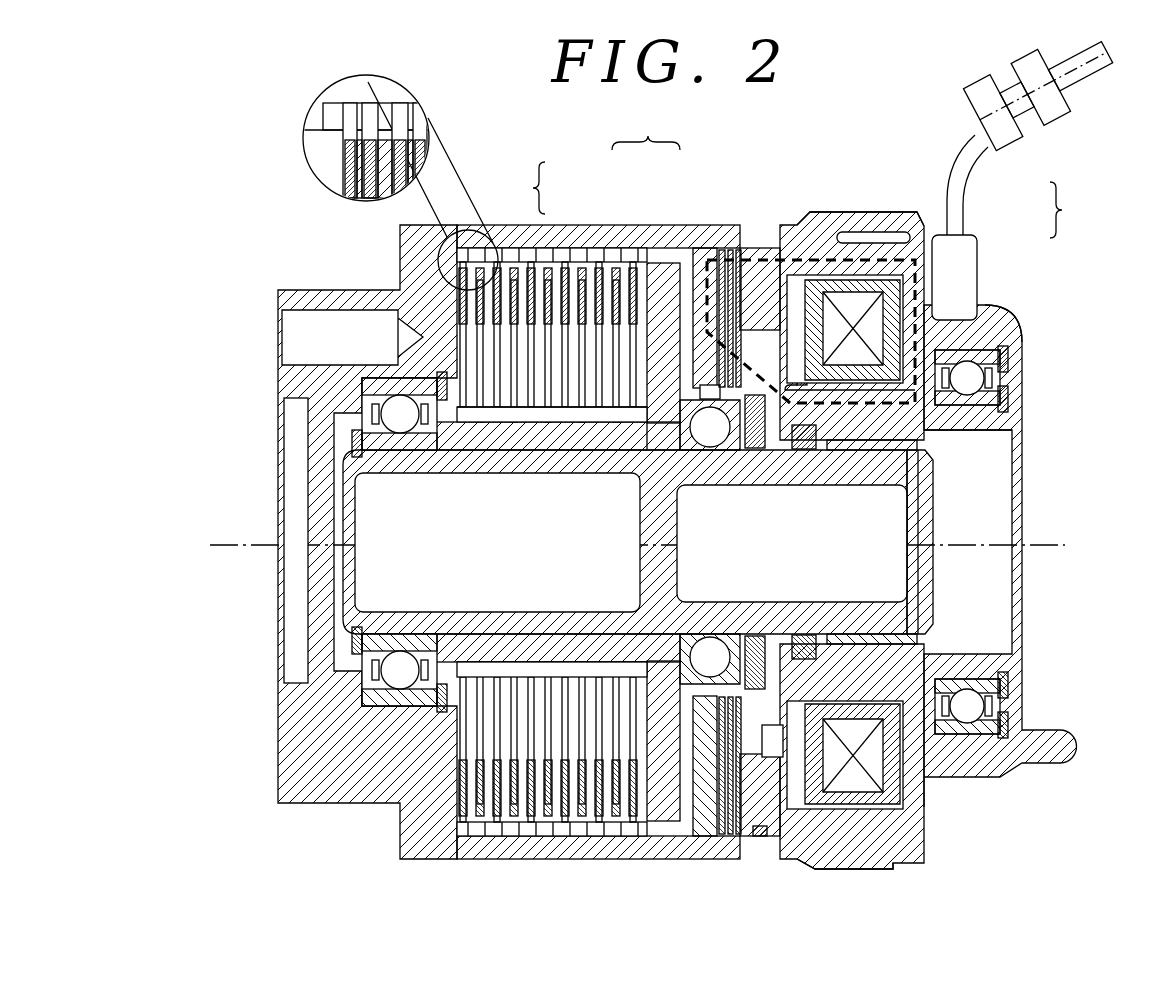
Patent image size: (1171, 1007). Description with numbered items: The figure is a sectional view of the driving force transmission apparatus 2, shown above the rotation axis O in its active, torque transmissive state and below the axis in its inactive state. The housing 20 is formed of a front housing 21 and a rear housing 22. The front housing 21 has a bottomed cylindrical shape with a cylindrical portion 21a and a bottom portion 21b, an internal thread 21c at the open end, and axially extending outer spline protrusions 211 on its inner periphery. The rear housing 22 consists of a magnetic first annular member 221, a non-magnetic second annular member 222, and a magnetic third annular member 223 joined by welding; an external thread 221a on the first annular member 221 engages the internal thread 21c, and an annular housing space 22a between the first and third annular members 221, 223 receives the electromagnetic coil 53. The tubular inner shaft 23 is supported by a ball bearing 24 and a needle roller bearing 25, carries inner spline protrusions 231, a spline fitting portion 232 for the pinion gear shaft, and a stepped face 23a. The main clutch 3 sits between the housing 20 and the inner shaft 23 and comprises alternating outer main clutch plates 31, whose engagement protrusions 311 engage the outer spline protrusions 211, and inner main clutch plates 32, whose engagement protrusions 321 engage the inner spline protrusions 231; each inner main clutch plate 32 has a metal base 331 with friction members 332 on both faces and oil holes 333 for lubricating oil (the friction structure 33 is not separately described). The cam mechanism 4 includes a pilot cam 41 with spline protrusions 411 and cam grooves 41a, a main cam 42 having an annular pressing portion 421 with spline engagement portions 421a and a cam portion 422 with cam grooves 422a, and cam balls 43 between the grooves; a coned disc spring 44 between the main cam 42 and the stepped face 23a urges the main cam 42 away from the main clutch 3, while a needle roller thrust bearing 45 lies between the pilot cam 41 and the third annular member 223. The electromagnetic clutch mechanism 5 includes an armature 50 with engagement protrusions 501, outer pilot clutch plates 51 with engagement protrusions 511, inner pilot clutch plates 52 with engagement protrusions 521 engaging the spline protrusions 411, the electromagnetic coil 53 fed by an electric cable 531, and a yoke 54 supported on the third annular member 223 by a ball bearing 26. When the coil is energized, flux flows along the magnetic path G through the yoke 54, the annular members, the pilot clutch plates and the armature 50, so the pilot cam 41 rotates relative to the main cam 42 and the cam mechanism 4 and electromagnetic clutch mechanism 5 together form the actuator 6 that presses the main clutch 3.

The driving force transmission apparatus 2 is at (669, 480).
The housing 20 is at (659, 477).
The front housing 21 is at (659, 477).
The cylindrical portion 21a is at (532, 232).
The bottom portion 21b is at (331, 542).
The internal thread 21c is at (930, 236).
The outer spline protrusions 211 is at (368, 110).
The first annular member 221 is at (853, 536).
The external thread 221a is at (857, 846).
The second annular member 222 is at (762, 268).
The third annular member 223 is at (1012, 424).
The rear housing 22 is at (1009, 521).
The housing space 22a is at (930, 807).
The inner shaft 23 is at (721, 543).
The stepped face 23a is at (627, 624).
The inner spline protrusions 231 is at (527, 664).
The spline fitting portion 232 is at (843, 604).
The ball bearing 24 is at (370, 440).
The needle roller bearing 25 is at (905, 446).
The ball bearing 26 is at (988, 360).
The main clutch 3 is at (424, 505).
The outer main clutch plates 31 is at (345, 142).
The engagement protrusions 311 is at (343, 118).
The inner main clutch plates 32 is at (242, 140).
The engagement protrusions 321 is at (494, 384).
The friction material 33 is at (548, 542).
The base 331 is at (360, 175).
The friction members 332 is at (343, 160).
The oil holes 333 is at (460, 356).
The cam mechanism 4 is at (660, 256).
The pilot cam 41 is at (768, 646).
The cam grooves 41a is at (758, 398).
The spline protrusions 411 is at (692, 788).
The main cam 42 is at (640, 490).
The pressing portion 421 is at (604, 262).
The spline engagement portions 421a is at (643, 428).
The cam portion 422 is at (626, 262).
The cam grooves 422a is at (710, 398).
The cam balls 43 is at (704, 440).
The coned disc spring 44 is at (672, 446).
The needle roller thrust bearing 45 is at (760, 656).
The electromagnetic clutch mechanism 5 is at (716, 246).
The armature 50 is at (754, 751).
The engagement protrusions 501 is at (718, 842).
The outer pilot clutch plates 51 is at (757, 836).
The engagement protrusions 511 is at (740, 836).
The inner pilot clutch plates 52 is at (752, 846).
The engagement protrusions 521 is at (746, 733).
The electromagnetic coil 53 is at (915, 415).
The electric cable 531 is at (978, 152).
The yoke 54 is at (1000, 333).
The actuator 6 is at (676, 247).
The magnetic path G is at (864, 236).
The rotation axis O is at (1070, 545).